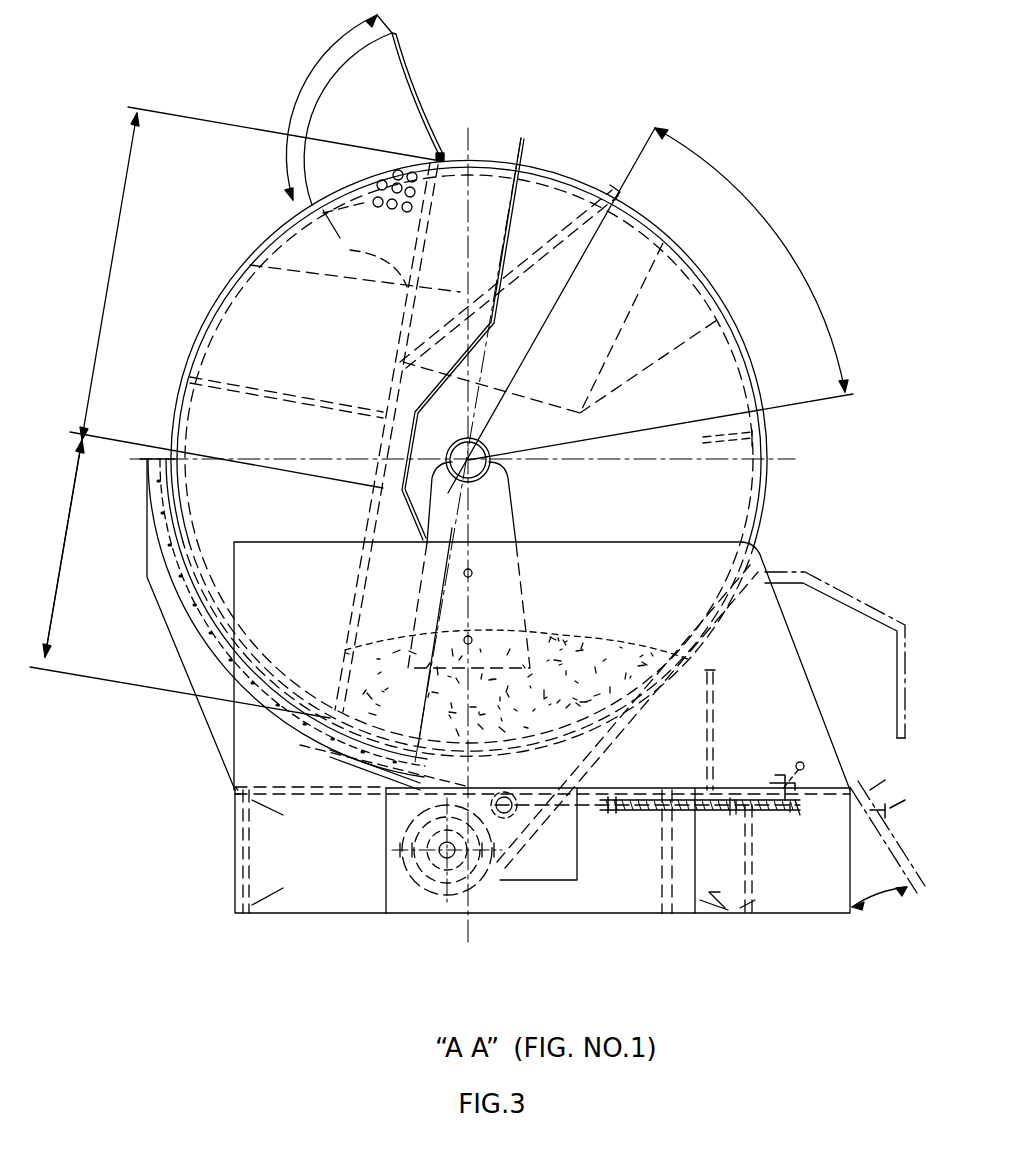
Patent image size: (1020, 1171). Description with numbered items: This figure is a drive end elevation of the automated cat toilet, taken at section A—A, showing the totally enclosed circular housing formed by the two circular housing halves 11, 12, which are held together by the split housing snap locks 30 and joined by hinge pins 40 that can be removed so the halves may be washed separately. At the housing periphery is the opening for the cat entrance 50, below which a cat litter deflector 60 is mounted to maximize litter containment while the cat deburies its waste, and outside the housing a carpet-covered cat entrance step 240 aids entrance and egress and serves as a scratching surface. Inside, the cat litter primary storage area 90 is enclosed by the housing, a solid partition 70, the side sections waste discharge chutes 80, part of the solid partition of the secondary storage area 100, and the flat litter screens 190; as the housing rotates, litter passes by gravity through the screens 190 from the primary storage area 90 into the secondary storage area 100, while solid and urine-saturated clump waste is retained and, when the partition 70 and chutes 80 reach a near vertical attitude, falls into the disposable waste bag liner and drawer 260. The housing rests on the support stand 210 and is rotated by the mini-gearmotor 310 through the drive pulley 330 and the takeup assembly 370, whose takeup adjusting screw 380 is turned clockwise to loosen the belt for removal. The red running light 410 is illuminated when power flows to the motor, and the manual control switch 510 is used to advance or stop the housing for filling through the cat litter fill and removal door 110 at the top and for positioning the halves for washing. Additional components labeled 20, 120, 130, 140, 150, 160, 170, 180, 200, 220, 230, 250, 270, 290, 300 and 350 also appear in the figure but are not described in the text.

The circular housing half 11 is at (516, 192).
The circular housing half 12 is at (478, 165).
The drum axle hub 20 is at (488, 448).
The split housing snap locks 30 is at (527, 147).
The hinge pins 40 is at (355, 778).
The cat entrance 50 is at (778, 218).
The cat litter deflector 60 is at (748, 442).
The solid partition 70 is at (612, 200).
The side sections waste discharge chutes 80 is at (548, 305).
The cat litter primary storage area 90 is at (715, 500).
The cat litter secondary storage area 100 is at (108, 300).
The cat litter fill and removal door 110 is at (322, 62).
The trough 120 is at (368, 290).
The perforations 130 is at (338, 236).
The side plate 140 is at (215, 745).
The screen 150 is at (526, 767).
The frame member 160 is at (238, 795).
The screen support 170 is at (172, 450).
The lower frame member 180 is at (238, 798).
The litter screens 190 is at (72, 575).
The partition wall 200 is at (383, 490).
The support stand 210 is at (770, 552).
The pivot angle 220 is at (865, 908).
The bracket 230 is at (715, 685).
The cat entrance step 240 is at (858, 590).
The base 250 is at (790, 888).
The disposable waste bag liner and drawer 260 is at (283, 889).
The support foot 270 is at (710, 905).
The hinge 290 is at (838, 785).
The pedestal 300 is at (545, 512).
The mini-gearmotor 310 is at (540, 905).
The drive pulley 330 is at (447, 895).
The support post 350 is at (400, 905).
The takeup assembly 370 is at (598, 820).
The takeup adjusting screw 380 is at (733, 808).
The red running light 410 is at (778, 780).
The manual control switch 510 is at (801, 762).